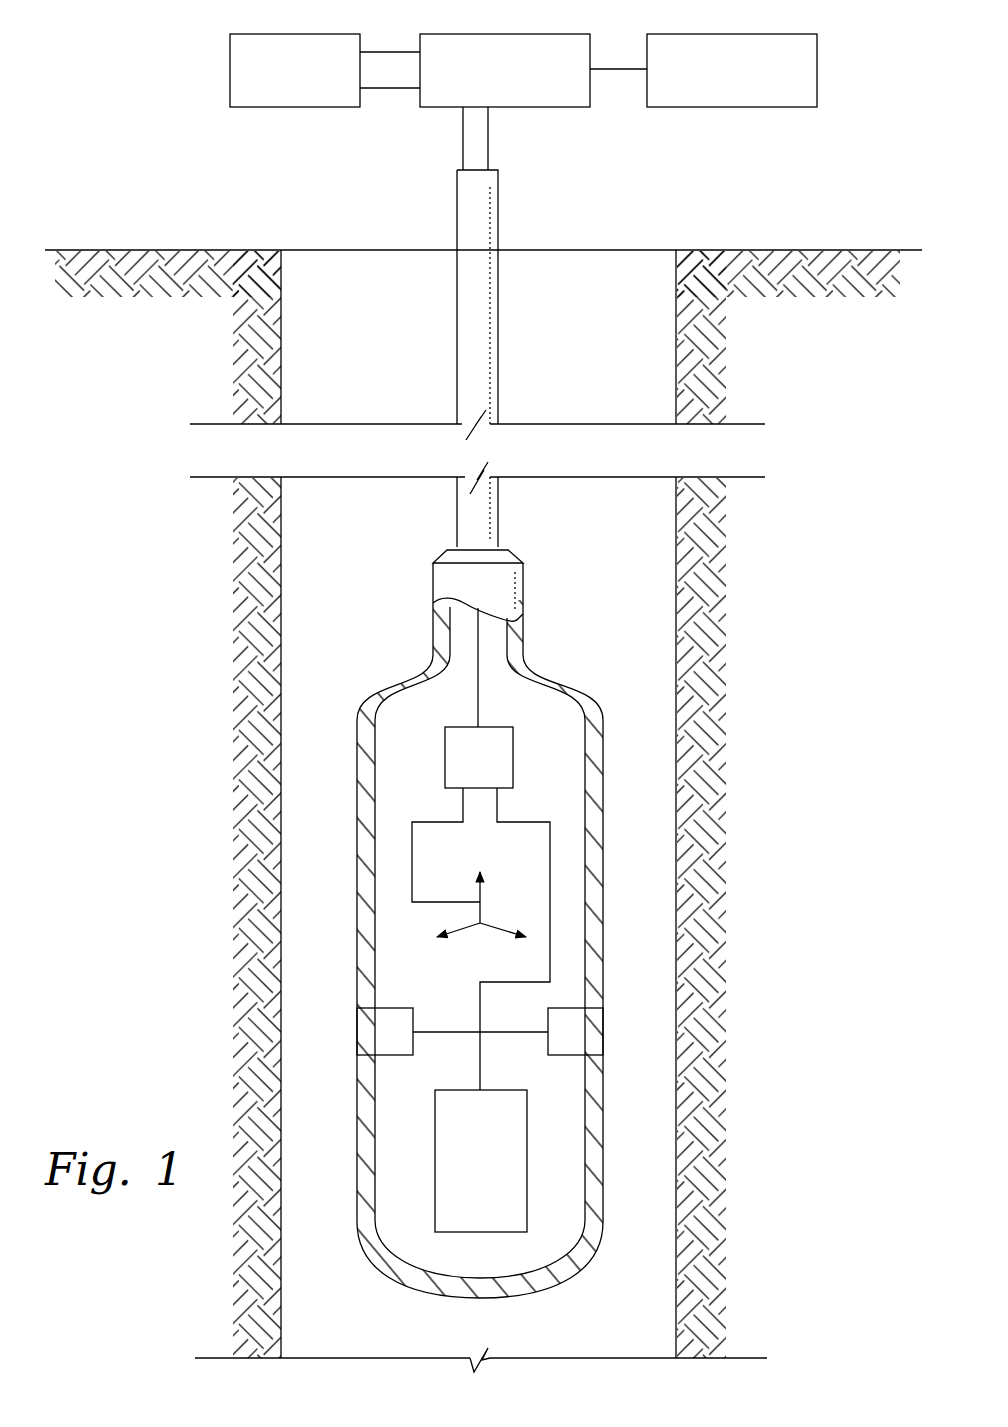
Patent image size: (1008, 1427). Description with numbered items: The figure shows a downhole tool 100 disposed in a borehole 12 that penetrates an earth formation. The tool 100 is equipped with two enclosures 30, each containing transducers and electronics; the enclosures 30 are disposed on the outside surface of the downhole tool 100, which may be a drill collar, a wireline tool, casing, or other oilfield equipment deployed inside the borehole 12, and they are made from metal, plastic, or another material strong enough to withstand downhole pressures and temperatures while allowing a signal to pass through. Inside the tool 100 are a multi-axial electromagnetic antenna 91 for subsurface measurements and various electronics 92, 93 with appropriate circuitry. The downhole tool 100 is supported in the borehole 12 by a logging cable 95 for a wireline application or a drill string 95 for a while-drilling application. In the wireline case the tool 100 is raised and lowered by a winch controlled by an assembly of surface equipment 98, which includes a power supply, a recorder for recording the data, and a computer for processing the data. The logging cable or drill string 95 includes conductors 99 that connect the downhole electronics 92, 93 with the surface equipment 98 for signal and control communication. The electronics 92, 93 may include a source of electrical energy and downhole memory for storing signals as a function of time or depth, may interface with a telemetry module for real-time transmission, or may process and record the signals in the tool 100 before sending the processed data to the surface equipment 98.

The borehole 12 is at (676, 540).
The enclosures 30 is at (372, 1022).
The multi-axial electromagnetic antenna 91 is at (499, 910).
The electronics 92 is at (468, 1167).
The electronics 93 is at (466, 769).
The logging cable or drill string 95 is at (457, 207).
The surface equipment 98 is at (216, 61).
The conductors 99 is at (463, 140).
The downhole tool 100 is at (382, 563).